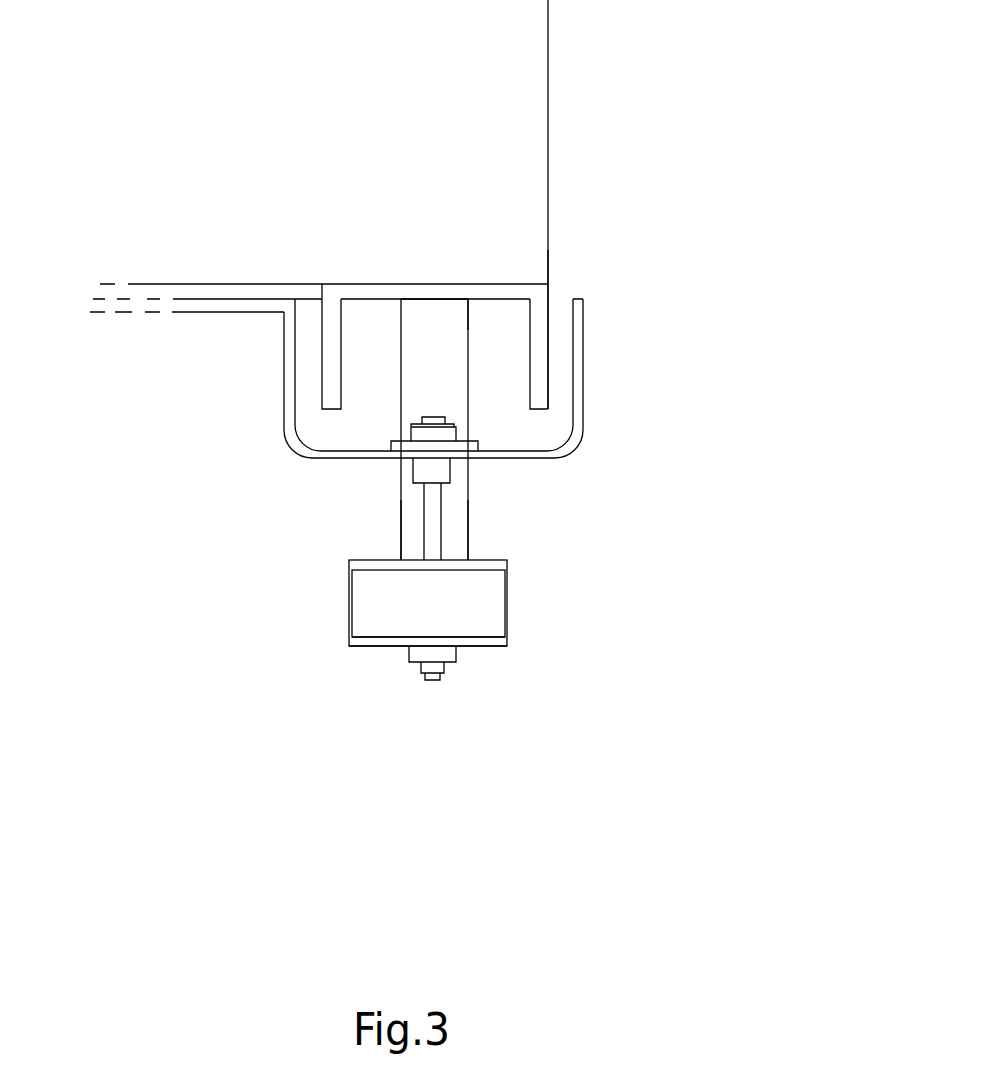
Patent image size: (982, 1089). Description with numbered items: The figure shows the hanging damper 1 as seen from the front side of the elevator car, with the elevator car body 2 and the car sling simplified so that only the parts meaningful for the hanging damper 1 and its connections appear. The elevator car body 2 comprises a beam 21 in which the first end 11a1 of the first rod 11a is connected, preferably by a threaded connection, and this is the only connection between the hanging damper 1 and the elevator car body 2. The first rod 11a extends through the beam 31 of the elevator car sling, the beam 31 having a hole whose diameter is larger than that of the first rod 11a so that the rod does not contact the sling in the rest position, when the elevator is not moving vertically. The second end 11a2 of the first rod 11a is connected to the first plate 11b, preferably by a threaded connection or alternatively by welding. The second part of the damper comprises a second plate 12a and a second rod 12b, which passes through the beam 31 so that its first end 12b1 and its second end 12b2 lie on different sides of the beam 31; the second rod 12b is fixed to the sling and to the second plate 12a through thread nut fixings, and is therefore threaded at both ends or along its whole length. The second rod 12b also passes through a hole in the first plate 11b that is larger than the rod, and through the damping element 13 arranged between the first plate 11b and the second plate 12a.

The hanging damper 1 is at (431, 507).
The elevator car body 2 is at (548, 150).
The beam 21 is at (548, 291).
The beam of the elevator car sling 31 is at (583, 372).
The first rod 11a is at (470, 513).
The first end of the first rod 11a1 is at (460, 303).
The second end of the first rod 11a2 is at (455, 560).
The first plate 11b is at (485, 565).
The damping element 13 is at (380, 602).
The second plate 12a is at (350, 640).
The second rod 12b is at (430, 514).
The first end of the second rod 12b1 is at (408, 424).
The second end of the second rod 12b2 is at (425, 673).